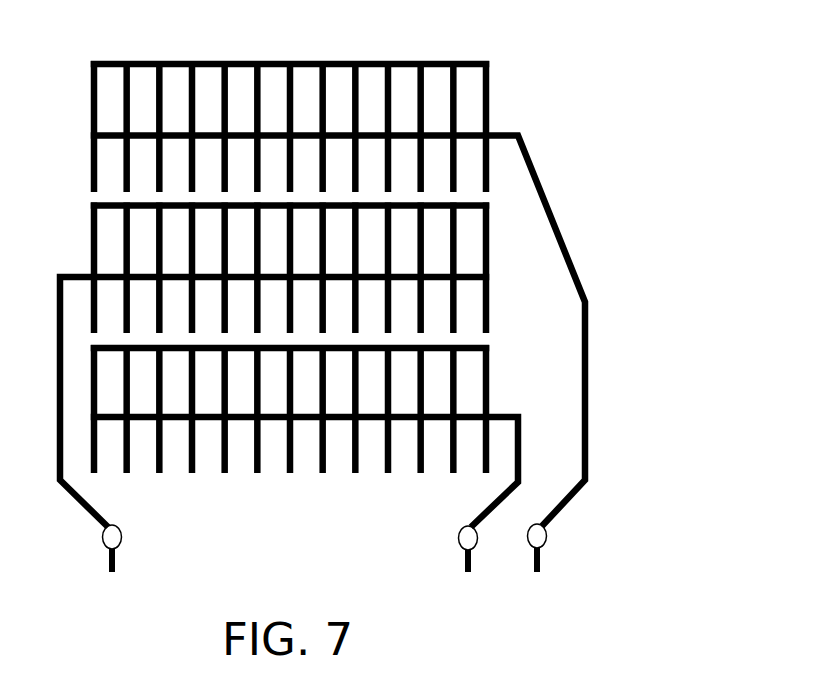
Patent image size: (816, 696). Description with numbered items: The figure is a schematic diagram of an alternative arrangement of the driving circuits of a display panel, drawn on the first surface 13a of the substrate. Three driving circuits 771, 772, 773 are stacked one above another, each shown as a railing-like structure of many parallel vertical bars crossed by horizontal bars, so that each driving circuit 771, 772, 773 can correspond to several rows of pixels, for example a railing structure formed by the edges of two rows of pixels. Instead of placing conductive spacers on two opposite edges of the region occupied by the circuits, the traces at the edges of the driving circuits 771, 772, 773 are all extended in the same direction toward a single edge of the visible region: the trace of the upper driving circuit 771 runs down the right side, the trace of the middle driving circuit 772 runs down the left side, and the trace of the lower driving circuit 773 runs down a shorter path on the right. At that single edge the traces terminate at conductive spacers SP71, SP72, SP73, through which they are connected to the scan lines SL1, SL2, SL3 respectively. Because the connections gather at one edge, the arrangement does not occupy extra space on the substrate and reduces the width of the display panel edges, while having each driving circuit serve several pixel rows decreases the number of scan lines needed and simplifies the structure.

The first surface 13a is at (710, 48).
The driving circuit 771 is at (504, 108).
The driving circuit 772 is at (507, 275).
The driving circuit 773 is at (507, 407).
The conductive spacer SP71 is at (546, 528).
The conductive spacer SP72 is at (120, 529).
The conductive spacer SP73 is at (458, 531).
The scan line SL1 is at (536, 578).
The scan line SL2 is at (111, 578).
The scan line SL3 is at (467, 579).